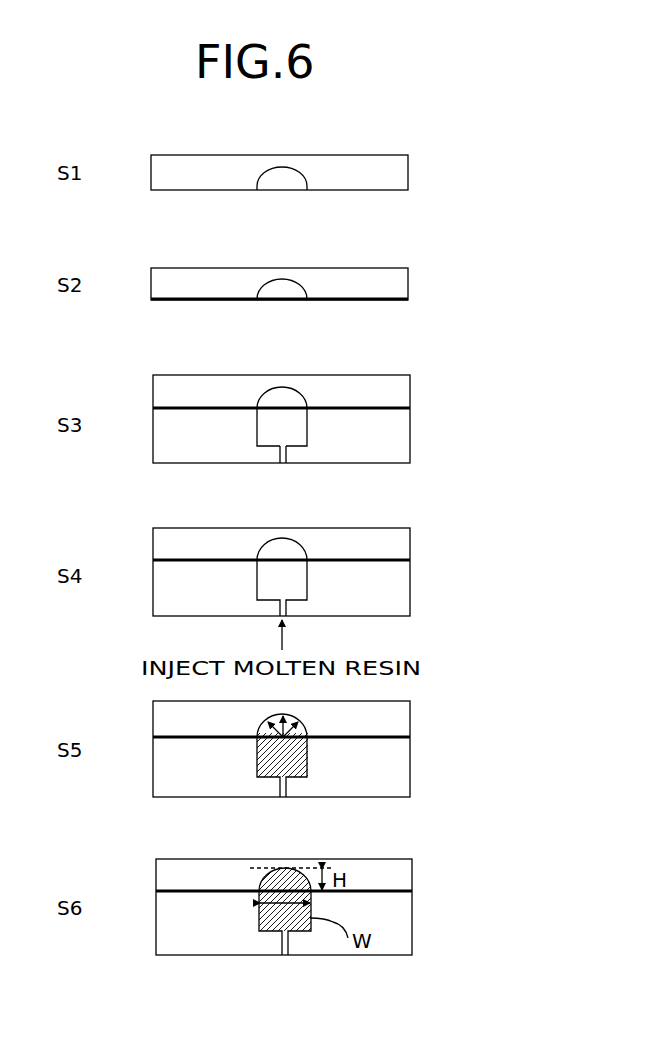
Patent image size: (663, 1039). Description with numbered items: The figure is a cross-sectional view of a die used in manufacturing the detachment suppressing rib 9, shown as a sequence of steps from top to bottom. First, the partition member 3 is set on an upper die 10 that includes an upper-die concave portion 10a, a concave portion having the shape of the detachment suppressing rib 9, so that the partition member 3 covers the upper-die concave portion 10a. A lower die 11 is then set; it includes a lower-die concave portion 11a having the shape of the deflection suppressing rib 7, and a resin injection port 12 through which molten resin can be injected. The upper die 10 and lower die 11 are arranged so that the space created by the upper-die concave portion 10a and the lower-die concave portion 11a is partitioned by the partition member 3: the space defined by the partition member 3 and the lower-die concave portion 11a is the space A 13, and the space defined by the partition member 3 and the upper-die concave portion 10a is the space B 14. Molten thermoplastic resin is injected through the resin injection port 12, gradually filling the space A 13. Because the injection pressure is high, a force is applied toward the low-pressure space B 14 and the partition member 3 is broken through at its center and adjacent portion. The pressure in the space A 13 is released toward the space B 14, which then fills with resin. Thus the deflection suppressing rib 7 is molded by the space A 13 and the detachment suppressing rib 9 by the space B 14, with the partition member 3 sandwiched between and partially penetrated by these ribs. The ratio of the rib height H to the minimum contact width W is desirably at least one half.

The upper die 10 is at (333, 178).
The upper-die concave portion 10a is at (267, 180).
The partition member 3 is at (363, 302).
The space B 14 is at (271, 398).
The space A 13 is at (273, 422).
The resin injection port 12 is at (283, 462).
The lower die 11 is at (381, 424).
The lower-die concave portion 11a is at (293, 420).
The detachment suppressing rib 9 is at (297, 868).
The deflection suppressing rib 7 is at (268, 930).